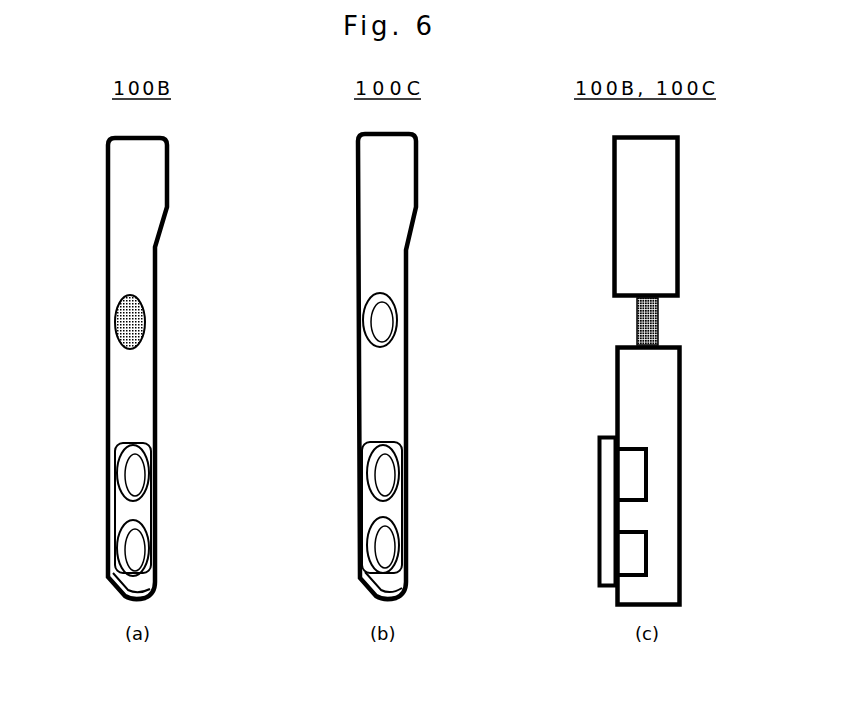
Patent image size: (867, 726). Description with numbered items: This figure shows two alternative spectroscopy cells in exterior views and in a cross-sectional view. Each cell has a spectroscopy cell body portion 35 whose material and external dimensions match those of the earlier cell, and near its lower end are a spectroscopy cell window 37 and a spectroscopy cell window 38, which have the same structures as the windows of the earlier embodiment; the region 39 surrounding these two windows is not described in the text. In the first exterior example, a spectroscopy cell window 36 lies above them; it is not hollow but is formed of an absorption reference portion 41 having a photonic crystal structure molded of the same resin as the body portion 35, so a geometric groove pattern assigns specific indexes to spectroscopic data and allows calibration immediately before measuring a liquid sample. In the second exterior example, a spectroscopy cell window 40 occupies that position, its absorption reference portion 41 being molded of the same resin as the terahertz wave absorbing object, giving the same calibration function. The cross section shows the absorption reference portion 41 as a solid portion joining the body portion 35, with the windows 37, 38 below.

The spectroscopy cell body portion 35 is at (140, 226).
The spectroscopy cell window 36 is at (150, 312).
The spectroscopy cell window 37 is at (115, 473).
The spectroscopy cell window 38 is at (115, 546).
The terminal recess 39 is at (140, 443).
The spectroscopy cell window 40 is at (400, 308).
The absorption reference portion 41 is at (622, 326).